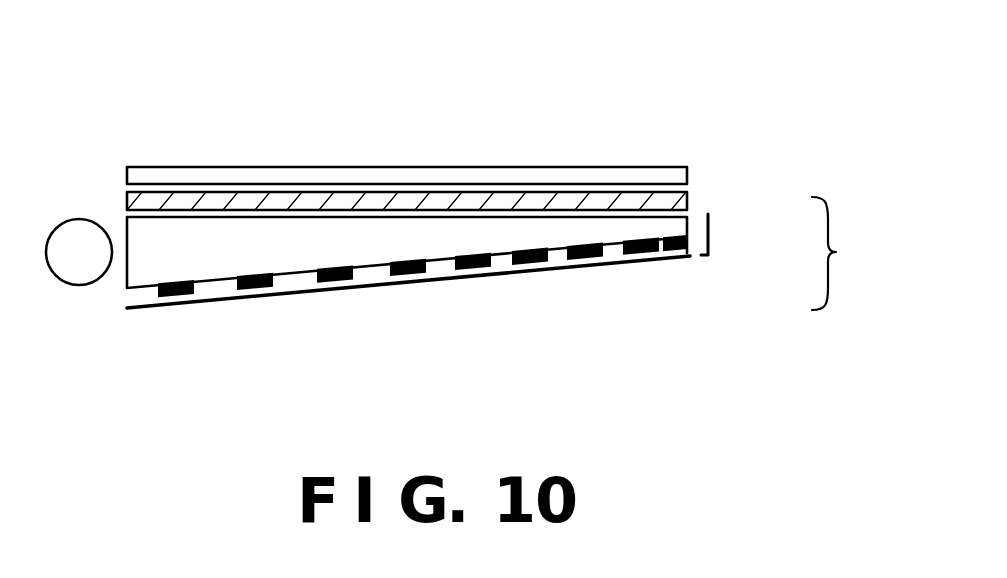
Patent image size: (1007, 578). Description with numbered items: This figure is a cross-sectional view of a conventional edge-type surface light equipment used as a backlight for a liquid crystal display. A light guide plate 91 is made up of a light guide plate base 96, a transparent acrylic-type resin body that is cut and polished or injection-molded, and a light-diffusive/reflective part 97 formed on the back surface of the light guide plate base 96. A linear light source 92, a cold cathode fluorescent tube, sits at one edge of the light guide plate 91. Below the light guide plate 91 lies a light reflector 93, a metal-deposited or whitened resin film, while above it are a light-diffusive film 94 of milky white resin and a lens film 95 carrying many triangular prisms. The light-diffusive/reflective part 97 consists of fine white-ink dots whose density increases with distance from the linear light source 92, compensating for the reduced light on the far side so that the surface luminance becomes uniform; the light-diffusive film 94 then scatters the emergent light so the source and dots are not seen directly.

The light guide plate 91 is at (855, 253).
The linear light source 92 is at (80, 272).
The light reflector 93 is at (503, 275).
The light-diffusive film 94 is at (688, 201).
The lens film 95 is at (673, 177).
The light guide plate base 96 is at (680, 229).
The light-diffusive/reflective part 97 is at (678, 252).